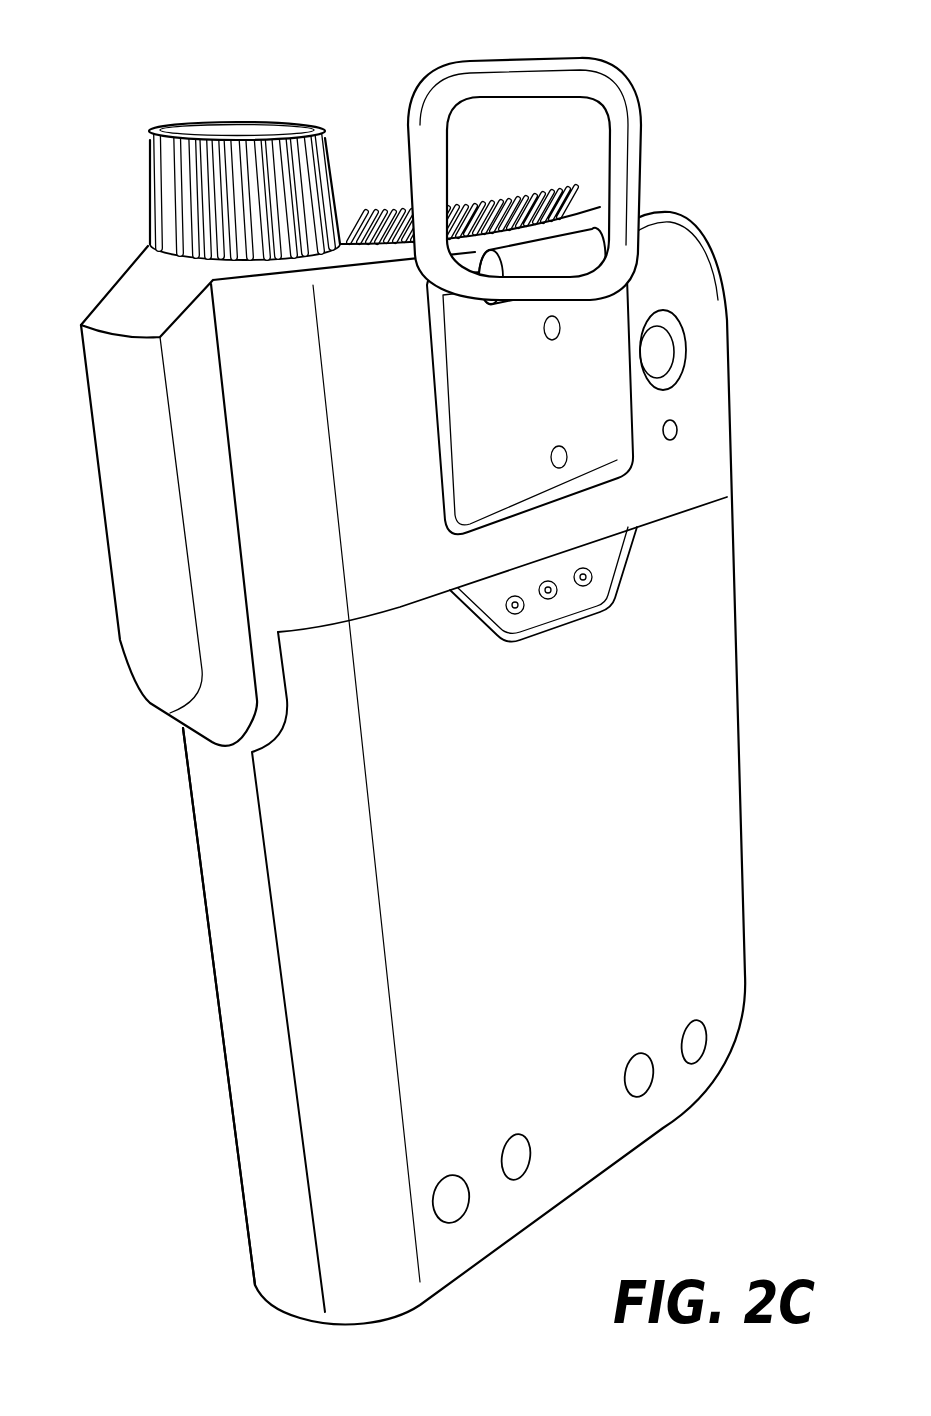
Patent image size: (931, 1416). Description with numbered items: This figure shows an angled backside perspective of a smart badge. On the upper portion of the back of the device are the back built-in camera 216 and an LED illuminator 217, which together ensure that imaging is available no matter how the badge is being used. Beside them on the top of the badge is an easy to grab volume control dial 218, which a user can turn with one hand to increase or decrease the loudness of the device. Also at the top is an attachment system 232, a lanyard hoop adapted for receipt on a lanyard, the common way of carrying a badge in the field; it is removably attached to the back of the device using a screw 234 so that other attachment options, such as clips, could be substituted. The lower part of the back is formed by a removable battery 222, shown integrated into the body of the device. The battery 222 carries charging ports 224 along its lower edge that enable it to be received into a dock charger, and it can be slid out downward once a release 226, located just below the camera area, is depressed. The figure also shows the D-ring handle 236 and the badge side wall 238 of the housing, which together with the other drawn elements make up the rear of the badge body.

The back built-in camera 216 is at (663, 357).
The LED illuminator 217 is at (674, 428).
The volume control dial 218 is at (225, 129).
The removable battery 222 is at (713, 917).
The charging ports 224 is at (512, 1167).
The release 226 is at (603, 580).
The attachment system 232 is at (667, 215).
The screw 234 is at (226, 959).
The D-ring handle 236 is at (517, 61).
The side wall 238 is at (122, 521).